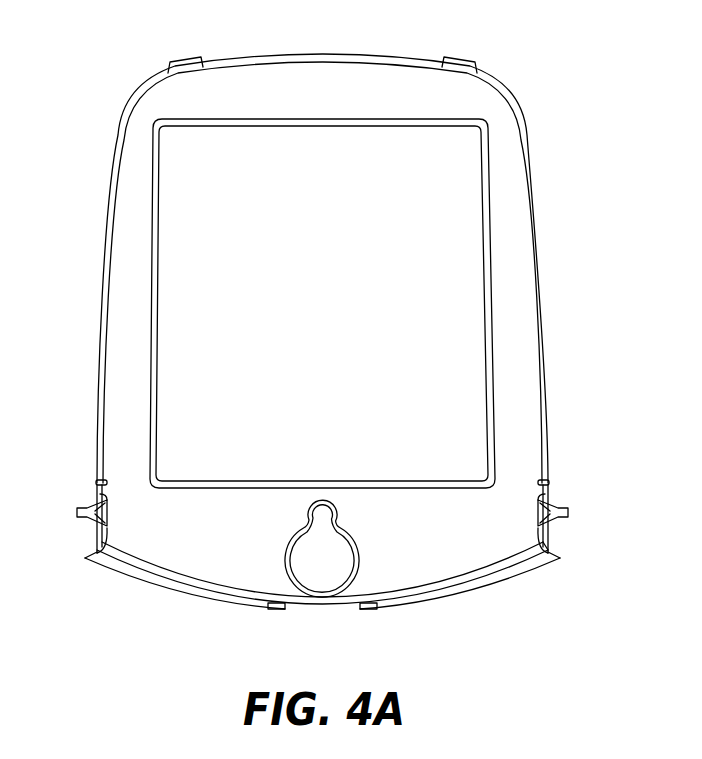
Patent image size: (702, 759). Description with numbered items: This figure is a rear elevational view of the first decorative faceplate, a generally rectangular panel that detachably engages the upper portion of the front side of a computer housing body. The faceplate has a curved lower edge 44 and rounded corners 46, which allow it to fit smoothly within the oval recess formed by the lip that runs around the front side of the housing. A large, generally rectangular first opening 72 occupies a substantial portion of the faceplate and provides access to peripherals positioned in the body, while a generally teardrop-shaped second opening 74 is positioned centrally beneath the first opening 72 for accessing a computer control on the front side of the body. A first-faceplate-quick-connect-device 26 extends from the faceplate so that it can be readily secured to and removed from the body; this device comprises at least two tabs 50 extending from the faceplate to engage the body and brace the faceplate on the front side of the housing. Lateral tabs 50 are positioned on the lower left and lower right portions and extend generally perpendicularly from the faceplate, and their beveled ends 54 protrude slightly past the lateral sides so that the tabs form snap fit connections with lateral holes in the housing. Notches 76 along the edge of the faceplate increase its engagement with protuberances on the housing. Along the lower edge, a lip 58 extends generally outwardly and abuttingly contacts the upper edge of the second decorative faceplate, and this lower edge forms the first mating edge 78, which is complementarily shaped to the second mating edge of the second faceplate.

The first-faceplate-quick-connect-device 26 is at (175, 62).
The curved lower edge 44 is at (178, 576).
The rounded corners 46 is at (147, 105).
The tabs 50 is at (195, 55).
The beveled ends 54 is at (85, 513).
The lip 58 is at (128, 585).
The first opening 72 is at (362, 391).
The second opening 74 is at (336, 570).
The notches 76 is at (96, 483).
The first mating edge 78 is at (350, 603).